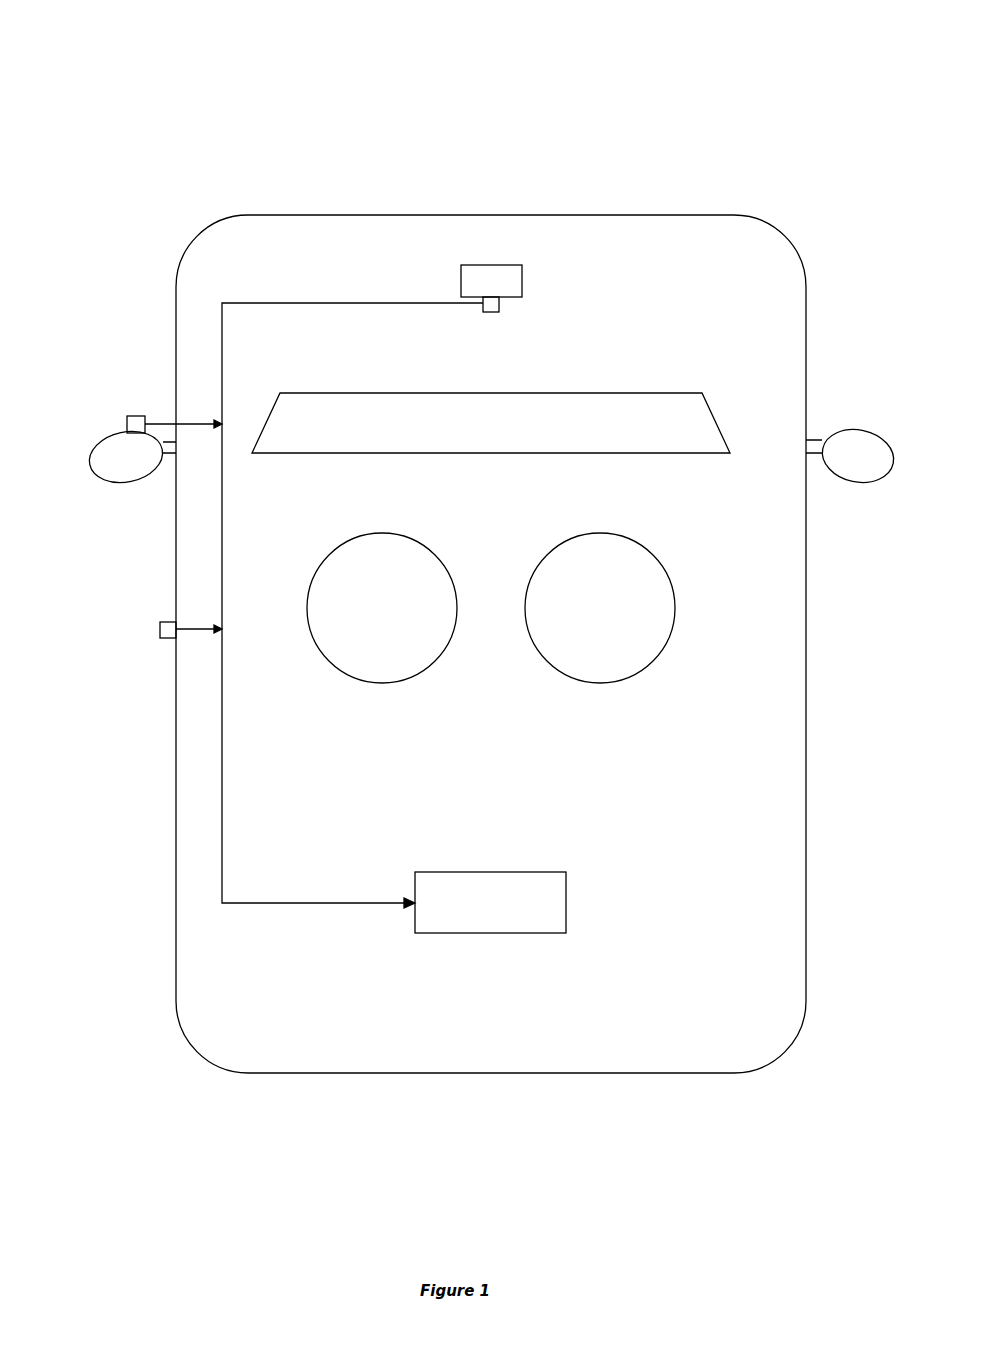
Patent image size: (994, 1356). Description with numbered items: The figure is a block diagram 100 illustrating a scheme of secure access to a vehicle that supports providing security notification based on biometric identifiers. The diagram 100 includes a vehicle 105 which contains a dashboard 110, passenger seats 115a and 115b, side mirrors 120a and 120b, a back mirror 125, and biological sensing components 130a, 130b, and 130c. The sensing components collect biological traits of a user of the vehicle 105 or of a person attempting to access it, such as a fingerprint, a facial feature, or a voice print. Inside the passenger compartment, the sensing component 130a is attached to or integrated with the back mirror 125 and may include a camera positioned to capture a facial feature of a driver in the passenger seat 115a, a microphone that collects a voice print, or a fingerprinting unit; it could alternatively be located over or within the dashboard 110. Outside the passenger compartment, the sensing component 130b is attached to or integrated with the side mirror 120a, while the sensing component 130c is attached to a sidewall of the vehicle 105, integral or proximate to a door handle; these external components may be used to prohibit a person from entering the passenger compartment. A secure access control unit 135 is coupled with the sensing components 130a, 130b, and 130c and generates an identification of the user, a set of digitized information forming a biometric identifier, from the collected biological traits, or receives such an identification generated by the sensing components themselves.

The block diagram 100 is at (116, 80).
The vehicle 105 is at (652, 1072).
The dashboard 110 is at (626, 393).
The passenger seat 115a is at (433, 552).
The passenger seat 115b is at (650, 552).
The side mirror 120a is at (115, 482).
The side mirror 120b is at (860, 482).
The back mirror 125 is at (462, 277).
The sensing component 130a is at (485, 315).
The sensing component 130b is at (137, 416).
The sensing component 130c is at (162, 623).
The secure access control unit 135 is at (520, 872).